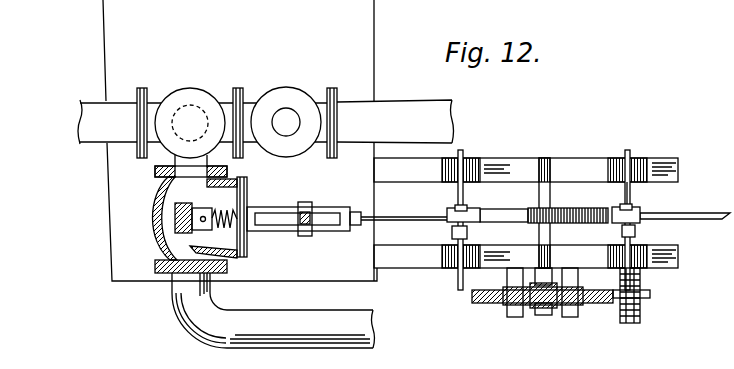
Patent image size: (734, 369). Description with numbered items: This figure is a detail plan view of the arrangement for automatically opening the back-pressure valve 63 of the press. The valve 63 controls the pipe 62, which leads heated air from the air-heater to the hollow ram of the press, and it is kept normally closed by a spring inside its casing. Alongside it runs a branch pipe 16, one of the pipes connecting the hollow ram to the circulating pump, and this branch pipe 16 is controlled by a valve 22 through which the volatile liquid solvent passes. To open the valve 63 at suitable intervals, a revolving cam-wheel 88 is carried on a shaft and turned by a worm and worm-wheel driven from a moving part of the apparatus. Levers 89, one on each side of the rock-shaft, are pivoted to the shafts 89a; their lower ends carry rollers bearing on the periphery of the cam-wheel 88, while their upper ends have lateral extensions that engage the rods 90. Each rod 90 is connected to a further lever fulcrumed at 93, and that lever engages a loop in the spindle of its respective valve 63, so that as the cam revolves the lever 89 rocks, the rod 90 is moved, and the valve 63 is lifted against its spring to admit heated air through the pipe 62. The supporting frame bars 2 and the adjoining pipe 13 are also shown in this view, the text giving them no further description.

The supply pipe 13 is at (108, 108).
The valve 22 is at (288, 103).
The branch pipe 16 is at (408, 112).
The back-pressure valve 63 is at (158, 227).
The fulcrum 93 is at (312, 213).
The frame bar 2 is at (487, 162).
The cam-wheel 88 is at (538, 196).
The rod 90 is at (402, 218).
The lever 89 is at (467, 234).
The shaft 89a is at (631, 198).
The pipe 62 is at (273, 310).